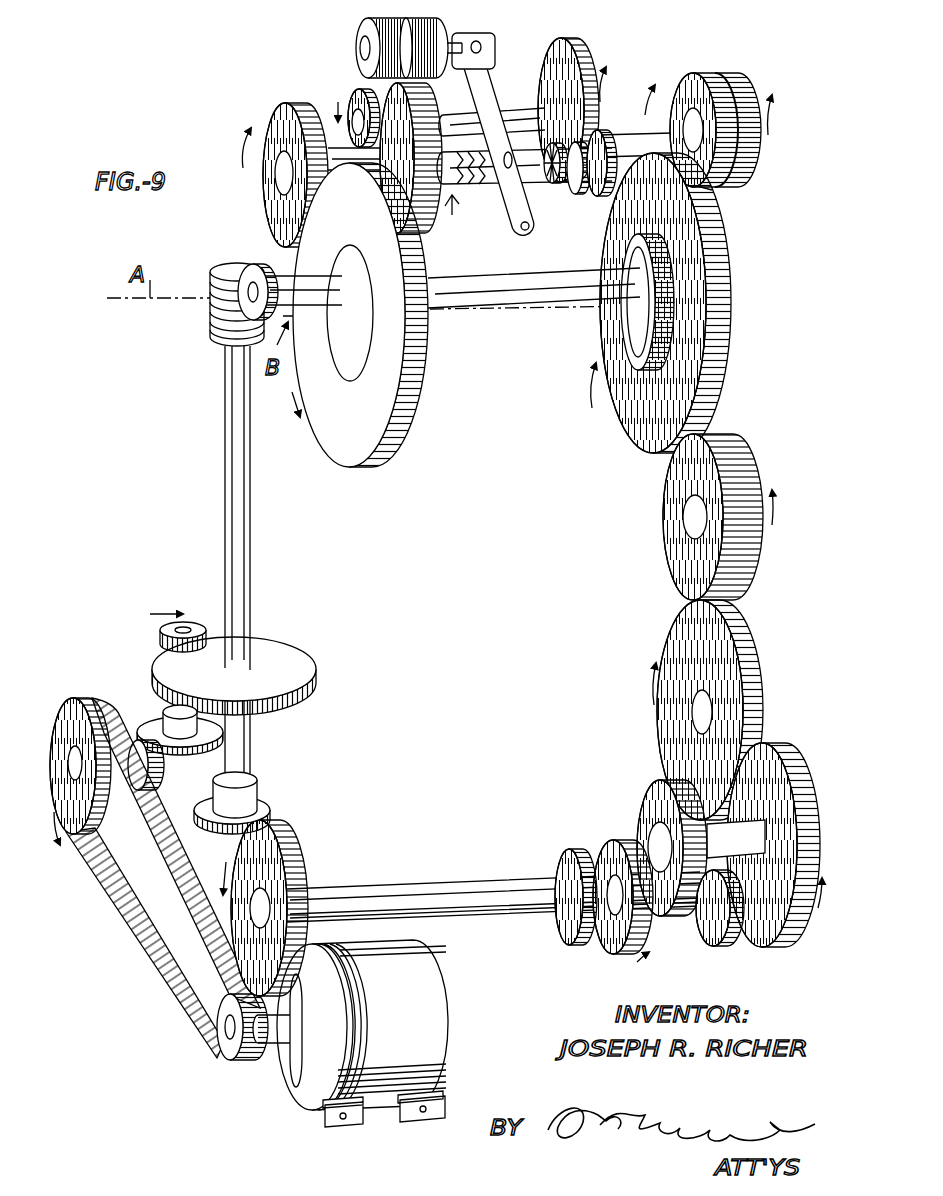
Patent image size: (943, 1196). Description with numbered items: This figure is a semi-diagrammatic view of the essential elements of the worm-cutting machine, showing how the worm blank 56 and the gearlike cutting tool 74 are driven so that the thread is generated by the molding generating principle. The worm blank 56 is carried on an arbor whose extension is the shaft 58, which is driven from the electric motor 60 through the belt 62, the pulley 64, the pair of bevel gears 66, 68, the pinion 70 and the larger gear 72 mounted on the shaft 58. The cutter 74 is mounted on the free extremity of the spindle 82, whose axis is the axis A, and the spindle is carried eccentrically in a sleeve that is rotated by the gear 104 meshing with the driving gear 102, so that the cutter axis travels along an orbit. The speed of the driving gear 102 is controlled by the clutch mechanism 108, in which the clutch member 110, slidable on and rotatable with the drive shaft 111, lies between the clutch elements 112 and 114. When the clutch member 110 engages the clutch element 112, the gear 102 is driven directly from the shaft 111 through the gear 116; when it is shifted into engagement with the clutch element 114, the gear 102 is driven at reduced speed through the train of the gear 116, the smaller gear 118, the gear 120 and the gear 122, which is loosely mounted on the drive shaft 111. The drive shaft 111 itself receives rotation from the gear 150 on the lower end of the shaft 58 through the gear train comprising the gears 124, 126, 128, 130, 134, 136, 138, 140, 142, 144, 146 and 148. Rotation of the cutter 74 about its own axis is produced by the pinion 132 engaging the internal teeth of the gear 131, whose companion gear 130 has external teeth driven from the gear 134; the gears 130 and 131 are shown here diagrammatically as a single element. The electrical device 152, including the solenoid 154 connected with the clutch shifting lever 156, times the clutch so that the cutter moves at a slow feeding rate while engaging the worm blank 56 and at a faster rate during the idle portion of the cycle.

The worm blank 56 is at (215, 320).
The shaft 58 is at (252, 550).
The electric motor 60 is at (440, 1010).
The belt 62 is at (140, 928).
The pulley 64 is at (86, 700).
The bevel gear 66 is at (165, 770).
The bevel gear 68 is at (166, 715).
The pinion 70 is at (165, 628).
The larger gear 72 is at (305, 662).
The gearlike cutting tool 74 is at (248, 280).
The spindle 82 is at (486, 308).
The driving gear 102 is at (283, 118).
The gear 104 is at (404, 437).
The clutch mechanism 108 is at (507, 98).
The clutch member 110 is at (480, 182).
The drive shaft 111 is at (553, 188).
The clutch element 112 is at (452, 215).
The clutch element 114 is at (580, 192).
The gear 116 is at (417, 114).
The smaller gear 118 is at (352, 100).
The gear 120 is at (575, 57).
The gear 122 is at (606, 132).
The gear 124 is at (712, 195).
The gear 126 is at (742, 100).
The gear 128 is at (738, 117).
The gear 130 is at (678, 303).
The internal gear 131 is at (640, 332).
The pinion 132 is at (676, 302).
The gear 134 is at (735, 455).
The gear 136 is at (745, 642).
The gear 138 is at (650, 815).
The gear 140 is at (782, 928).
The gear 142 is at (736, 938).
The gear 144 is at (620, 942).
The gear 146 is at (570, 932).
The gear 148 is at (296, 852).
The gear 150 is at (272, 810).
The electrical device 152 is at (423, 42).
The solenoid 154 is at (357, 35).
The clutch shifting lever 156 is at (487, 58).